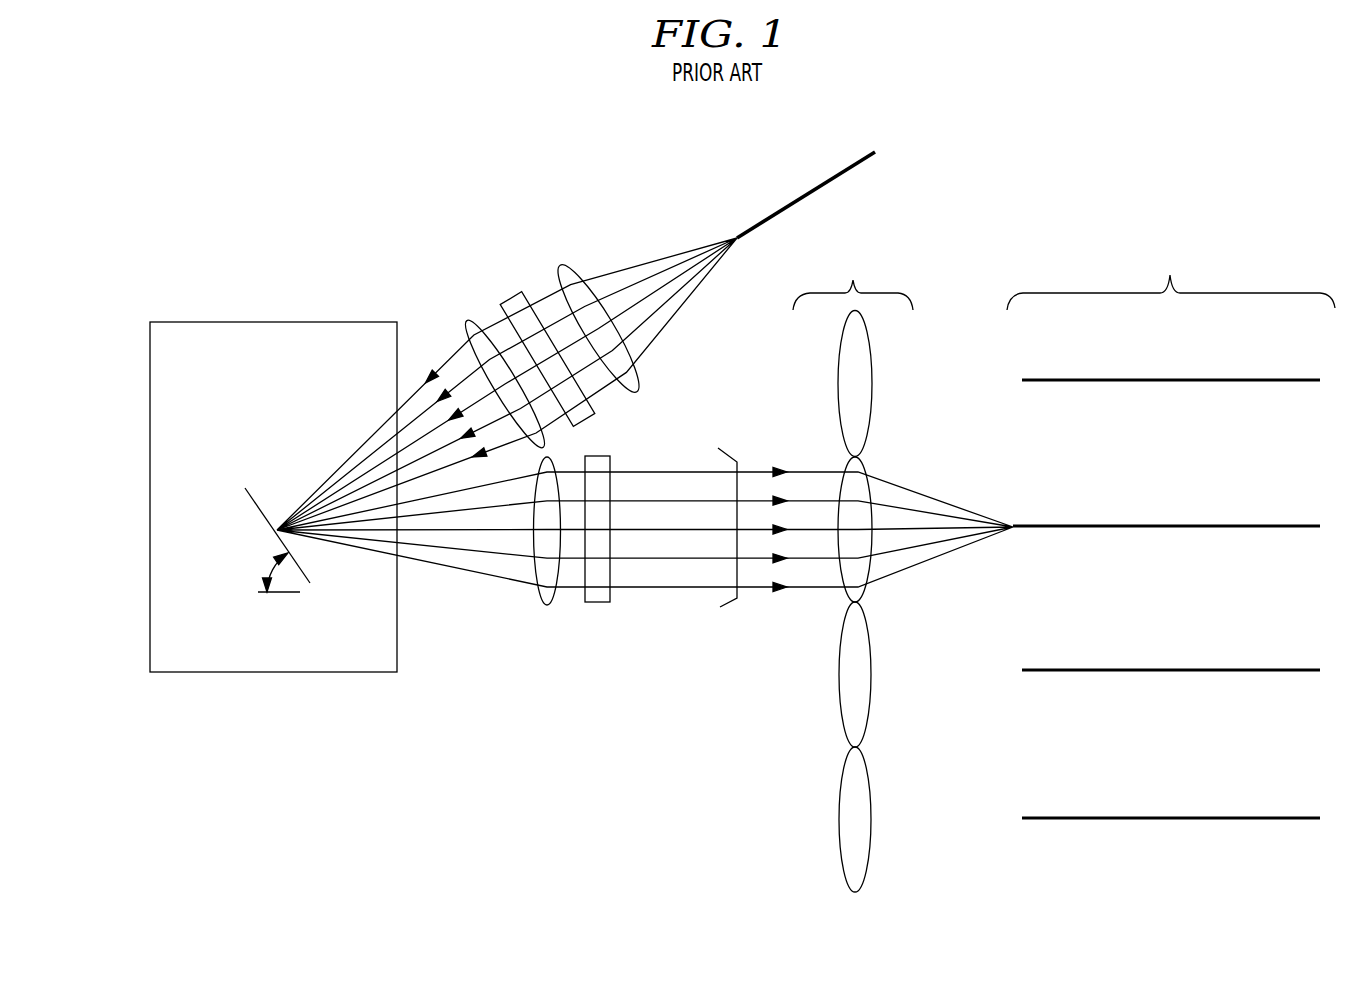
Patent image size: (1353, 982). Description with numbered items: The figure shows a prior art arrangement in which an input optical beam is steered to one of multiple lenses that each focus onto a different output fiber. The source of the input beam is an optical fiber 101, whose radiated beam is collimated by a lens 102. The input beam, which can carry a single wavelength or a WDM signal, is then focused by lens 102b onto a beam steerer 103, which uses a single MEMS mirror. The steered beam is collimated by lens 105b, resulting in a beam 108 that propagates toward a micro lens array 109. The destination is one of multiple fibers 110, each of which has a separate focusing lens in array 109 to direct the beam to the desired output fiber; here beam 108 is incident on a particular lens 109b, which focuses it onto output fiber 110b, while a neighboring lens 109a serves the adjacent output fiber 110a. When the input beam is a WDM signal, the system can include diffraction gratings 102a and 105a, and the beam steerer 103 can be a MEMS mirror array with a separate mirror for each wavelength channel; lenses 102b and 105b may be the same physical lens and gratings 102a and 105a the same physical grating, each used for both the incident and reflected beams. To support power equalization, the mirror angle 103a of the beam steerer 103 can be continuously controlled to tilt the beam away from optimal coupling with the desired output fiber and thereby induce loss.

The optical fiber 101 is at (812, 193).
The lens 102 is at (560, 268).
The diffraction grating 102a is at (510, 295).
The lens 102b is at (469, 324).
The beam steerer 103 is at (268, 321).
The angle 103a is at (272, 570).
The diffraction grating 105a is at (597, 603).
The lens 105b is at (547, 605).
The beam 108 is at (728, 608).
The micro lens array 109 is at (870, 571).
The lens 109a is at (872, 381).
The lens 109b is at (866, 469).
The fibers 110 is at (1171, 534).
The output fiber 110a is at (1132, 379).
The output fiber 110b is at (1133, 525).